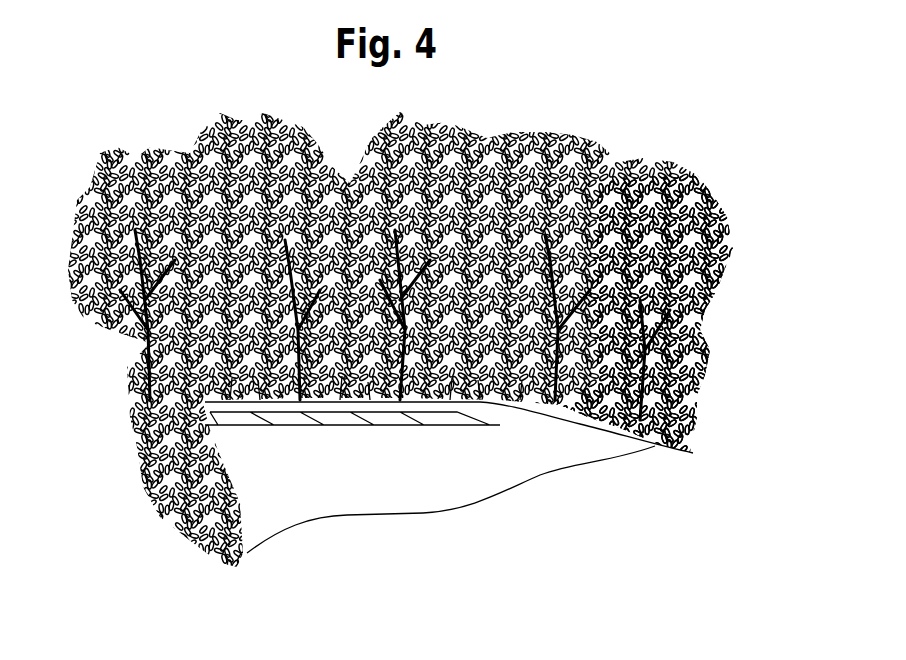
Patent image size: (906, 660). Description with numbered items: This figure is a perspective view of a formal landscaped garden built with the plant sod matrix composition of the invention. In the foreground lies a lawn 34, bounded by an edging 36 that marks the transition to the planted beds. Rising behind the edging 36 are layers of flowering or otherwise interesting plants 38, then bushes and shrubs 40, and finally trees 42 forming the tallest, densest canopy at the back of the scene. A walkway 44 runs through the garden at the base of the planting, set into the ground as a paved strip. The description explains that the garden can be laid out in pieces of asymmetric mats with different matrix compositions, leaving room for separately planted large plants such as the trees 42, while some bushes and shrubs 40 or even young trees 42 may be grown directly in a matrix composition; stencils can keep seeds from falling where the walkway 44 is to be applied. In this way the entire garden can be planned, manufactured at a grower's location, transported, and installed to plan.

The lawn 34 is at (437, 486).
The edging 36 is at (649, 448).
The plants 38 is at (700, 423).
The bushes and shrubs 40 is at (712, 358).
The trees 42 is at (580, 132).
The walkway 44 is at (453, 422).